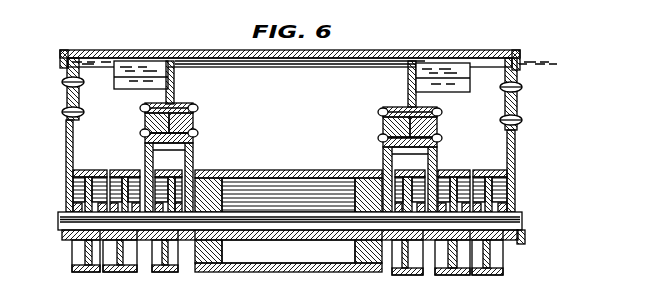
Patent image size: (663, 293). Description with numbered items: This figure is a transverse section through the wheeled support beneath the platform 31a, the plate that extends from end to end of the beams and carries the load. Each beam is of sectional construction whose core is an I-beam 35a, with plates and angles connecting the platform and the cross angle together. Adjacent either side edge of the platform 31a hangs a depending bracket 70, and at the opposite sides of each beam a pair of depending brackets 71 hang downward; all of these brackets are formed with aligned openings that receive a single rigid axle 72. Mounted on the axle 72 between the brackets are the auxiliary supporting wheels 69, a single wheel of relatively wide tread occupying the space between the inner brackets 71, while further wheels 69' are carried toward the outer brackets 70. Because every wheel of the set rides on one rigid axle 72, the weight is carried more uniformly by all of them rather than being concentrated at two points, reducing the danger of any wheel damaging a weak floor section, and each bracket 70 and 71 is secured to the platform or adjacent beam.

The platform 31a is at (213, 50).
The I-beam 35a is at (407, 82).
The depending bracket 70 is at (73, 161).
The depending brackets 71 is at (143, 160).
The auxiliary supporting wheels 69 is at (227, 221).
The hanger 69' is at (447, 266).
The axle 72 is at (308, 229).